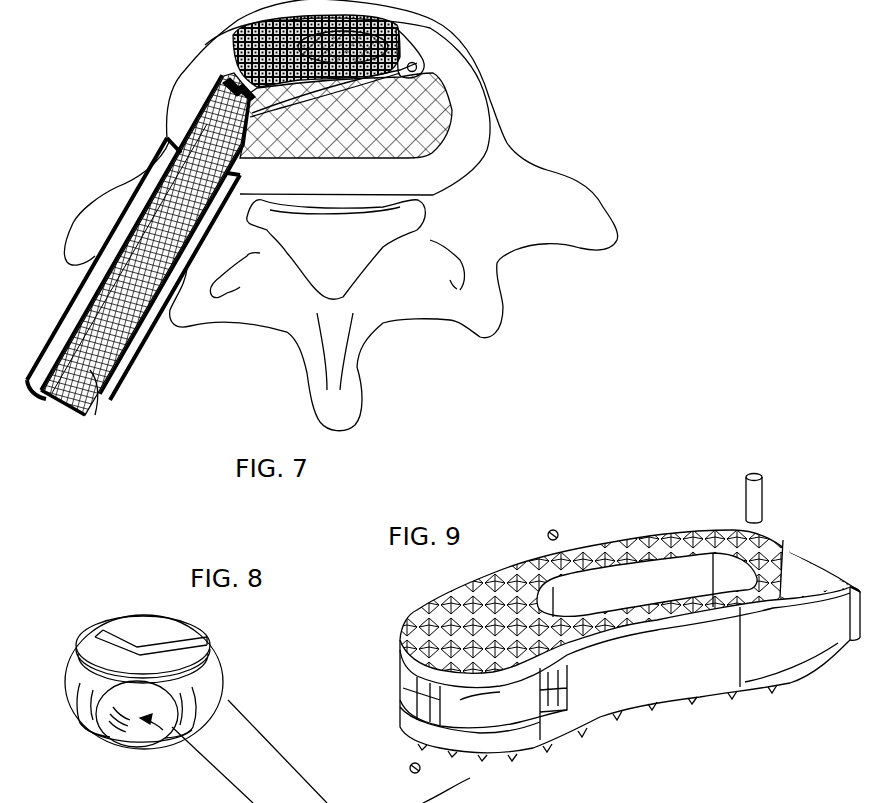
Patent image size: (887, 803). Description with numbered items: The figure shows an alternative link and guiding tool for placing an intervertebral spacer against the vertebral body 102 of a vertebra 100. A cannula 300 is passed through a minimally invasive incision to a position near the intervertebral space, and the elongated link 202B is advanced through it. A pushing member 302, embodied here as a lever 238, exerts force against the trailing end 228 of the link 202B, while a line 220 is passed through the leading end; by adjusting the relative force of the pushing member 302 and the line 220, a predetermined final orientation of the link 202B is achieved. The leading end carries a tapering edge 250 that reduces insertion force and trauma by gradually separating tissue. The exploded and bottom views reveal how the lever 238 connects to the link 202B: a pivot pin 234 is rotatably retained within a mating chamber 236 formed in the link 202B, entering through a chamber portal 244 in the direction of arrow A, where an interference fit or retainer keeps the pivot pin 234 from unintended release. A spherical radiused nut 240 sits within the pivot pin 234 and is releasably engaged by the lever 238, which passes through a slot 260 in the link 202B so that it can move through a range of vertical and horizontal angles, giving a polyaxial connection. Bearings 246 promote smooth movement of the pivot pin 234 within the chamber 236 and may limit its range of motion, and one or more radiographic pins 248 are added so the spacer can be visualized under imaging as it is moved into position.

In FIG. 7, the vertebra 100 is at (498, 262).
In FIG. 7, the vertebral body 102 is at (473, 123).
In FIG. 7, the link 202B is at (235, 43).
In FIG. 7, the line 220 is at (308, 116).
In FIG. 7, the trailing end 228 is at (295, 0).
In FIG. 7, the tapering edge 250 is at (414, 47).
In FIG. 9, the tapering edge 250 is at (802, 577).
In FIG. 7, the cannula 300 is at (143, 340).
In FIG. 7, the lever 238 is at (110, 343).
In FIG. 7, the pushing member 302 is at (99, 398).
In FIG. 8, the radiused nut 240 is at (213, 675).
In FIG. 9, the slot 260 is at (410, 698).
In FIG. 9, the chamber portal 244 is at (400, 747).
In FIG. 9, the bearings 246 is at (404, 777).
In FIG. 9, the radiographic pins 248 is at (738, 478).
In FIG. 9, the chamber 236 is at (487, 706).
In FIG. 9, the pivot pin 234 is at (462, 707).